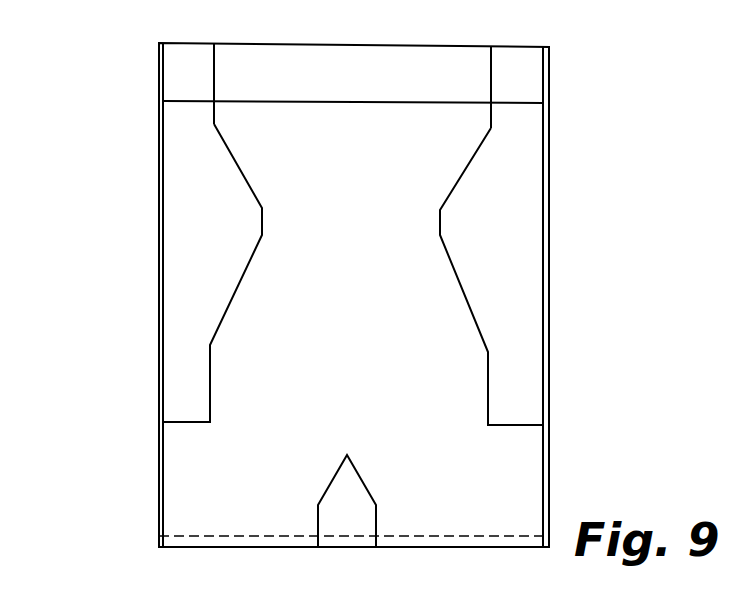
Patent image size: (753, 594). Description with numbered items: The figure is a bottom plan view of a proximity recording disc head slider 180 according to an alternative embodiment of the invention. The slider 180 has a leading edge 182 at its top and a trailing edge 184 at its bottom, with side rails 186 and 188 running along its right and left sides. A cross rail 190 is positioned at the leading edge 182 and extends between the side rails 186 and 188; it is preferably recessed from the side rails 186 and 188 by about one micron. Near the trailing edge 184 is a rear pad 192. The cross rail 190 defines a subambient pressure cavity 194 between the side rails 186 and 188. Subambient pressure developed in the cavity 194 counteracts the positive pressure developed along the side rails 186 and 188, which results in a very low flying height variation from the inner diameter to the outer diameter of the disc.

The slider 180 is at (138, 66).
The leading edge 182 is at (396, 46).
The trailing edge 184 is at (422, 549).
The side rail 186 is at (520, 226).
The side rail 188 is at (178, 216).
The cross rail 190 is at (335, 85).
The rear pad 192 is at (346, 514).
The subambient pressure cavity 194 is at (371, 297).